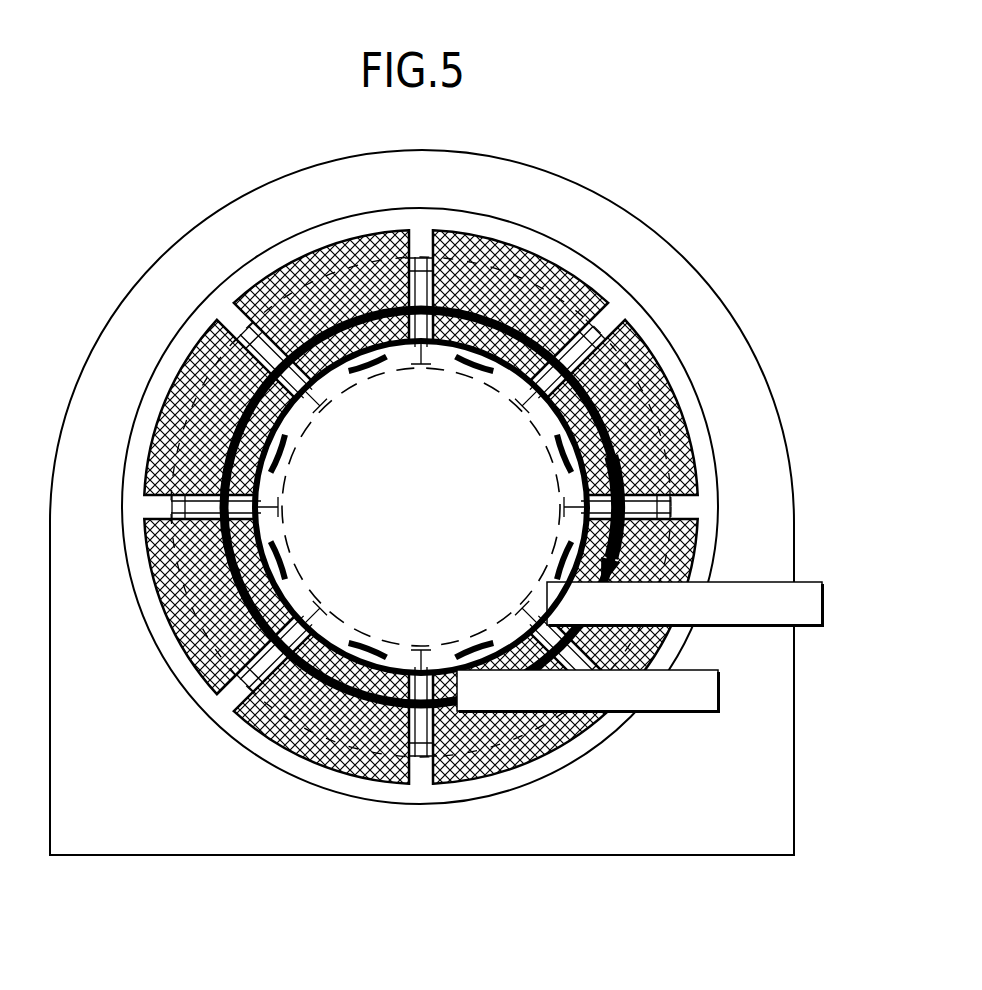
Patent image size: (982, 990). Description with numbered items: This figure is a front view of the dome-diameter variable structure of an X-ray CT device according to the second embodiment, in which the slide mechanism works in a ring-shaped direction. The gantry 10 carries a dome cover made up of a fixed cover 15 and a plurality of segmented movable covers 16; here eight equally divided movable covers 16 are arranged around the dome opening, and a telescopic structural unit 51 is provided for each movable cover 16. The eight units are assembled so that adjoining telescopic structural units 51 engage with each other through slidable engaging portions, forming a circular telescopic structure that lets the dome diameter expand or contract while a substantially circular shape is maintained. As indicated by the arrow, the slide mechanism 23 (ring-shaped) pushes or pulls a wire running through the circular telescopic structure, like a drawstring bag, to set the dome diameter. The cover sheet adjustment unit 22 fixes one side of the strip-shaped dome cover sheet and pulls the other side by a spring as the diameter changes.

The gantry 10 is at (653, 230).
The fixed cover 15 is at (704, 473).
The movable cover 16 is at (668, 380).
The cover sheet adjustment unit 22 is at (718, 692).
The slide mechanism (ring-shaped) 23 is at (752, 581).
The telescopic structural unit 51 is at (264, 536).